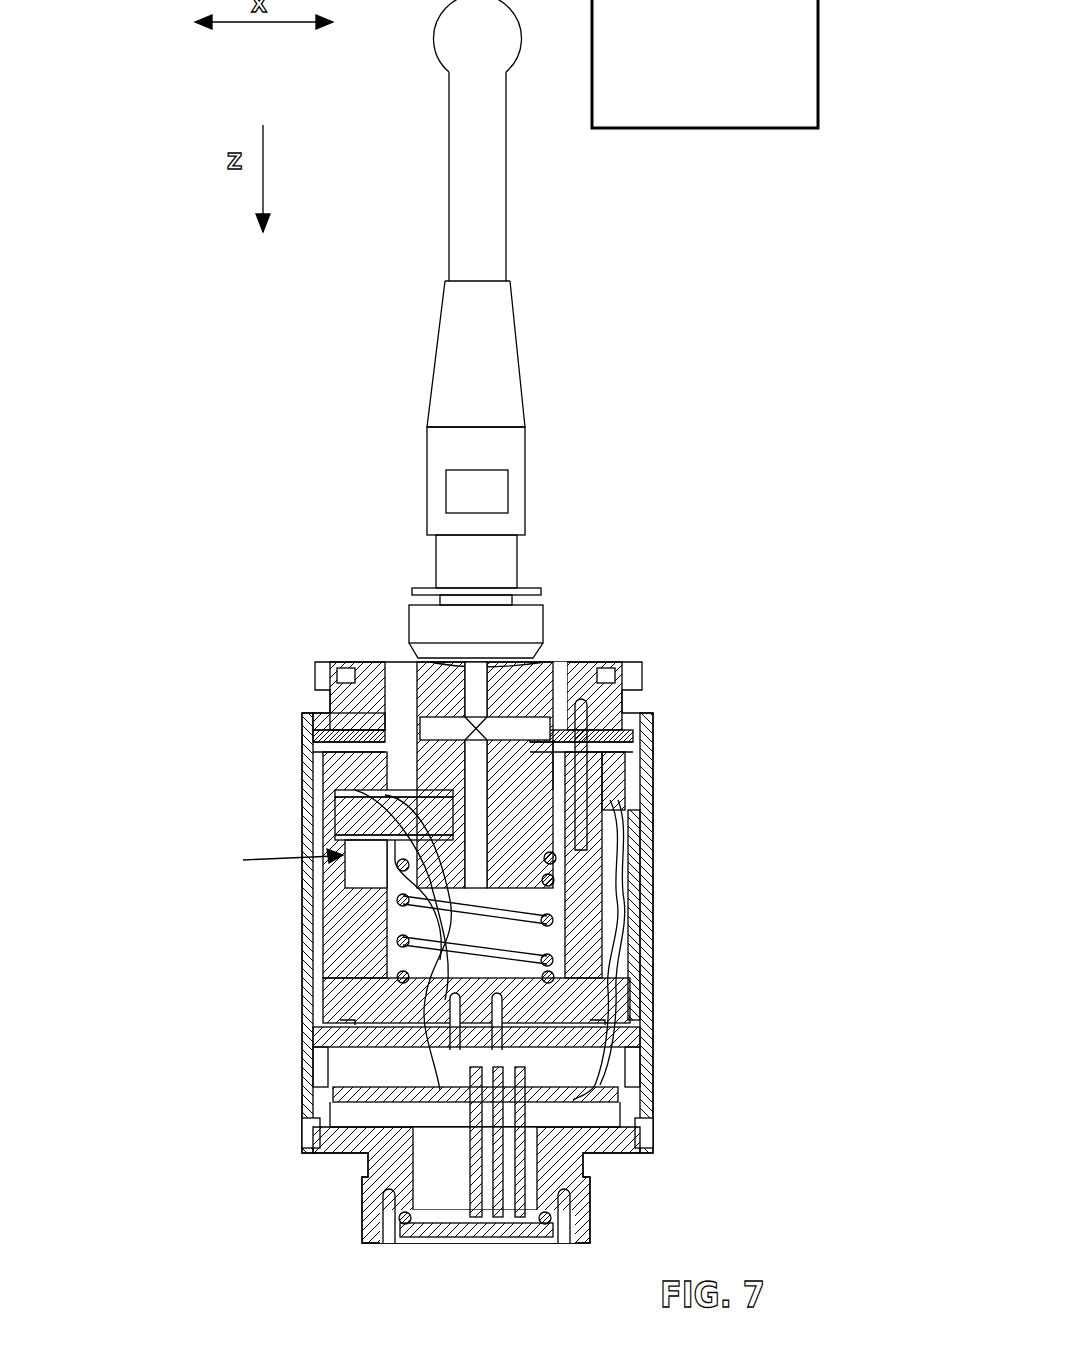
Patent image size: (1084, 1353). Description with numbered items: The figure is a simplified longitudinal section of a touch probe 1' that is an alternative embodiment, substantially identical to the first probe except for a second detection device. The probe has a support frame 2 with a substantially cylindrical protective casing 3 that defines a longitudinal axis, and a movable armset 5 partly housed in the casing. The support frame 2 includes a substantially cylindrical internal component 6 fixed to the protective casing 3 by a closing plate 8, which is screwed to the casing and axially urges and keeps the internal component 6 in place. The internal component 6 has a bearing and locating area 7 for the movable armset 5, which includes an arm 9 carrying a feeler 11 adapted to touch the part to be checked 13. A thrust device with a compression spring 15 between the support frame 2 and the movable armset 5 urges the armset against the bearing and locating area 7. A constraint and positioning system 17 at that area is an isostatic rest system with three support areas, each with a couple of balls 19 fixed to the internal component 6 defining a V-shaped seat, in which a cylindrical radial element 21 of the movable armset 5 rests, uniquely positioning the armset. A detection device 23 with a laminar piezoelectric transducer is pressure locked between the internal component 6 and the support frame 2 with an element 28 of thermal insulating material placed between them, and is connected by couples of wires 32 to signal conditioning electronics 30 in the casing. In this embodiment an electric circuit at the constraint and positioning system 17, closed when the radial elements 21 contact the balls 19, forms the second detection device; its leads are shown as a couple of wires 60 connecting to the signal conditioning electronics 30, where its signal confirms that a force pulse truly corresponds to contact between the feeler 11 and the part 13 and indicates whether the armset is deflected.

The touch probe 1' is at (666, 306).
The support frame 2 is at (657, 773).
The protective casing 3 is at (648, 915).
The movable armset 5 is at (539, 790).
The internal component 6 is at (318, 918).
The bearing and locating area 7 is at (345, 780).
The closing plate 8 is at (345, 1140).
The arm 9 is at (471, 335).
The feeler 11 is at (461, 48).
The part to be checked 13 is at (697, 93).
The compression spring 15 is at (402, 978).
The constraint and positioning system 17 is at (278, 860).
The balls 19 is at (345, 793).
The radial element 21 is at (398, 835).
The detection device 23 is at (322, 752).
The element made of thermal insulating material 28 is at (350, 728).
The signal conditioning electronics 30 is at (572, 1100).
The wires 32 is at (620, 982).
The wires 60 is at (420, 1070).